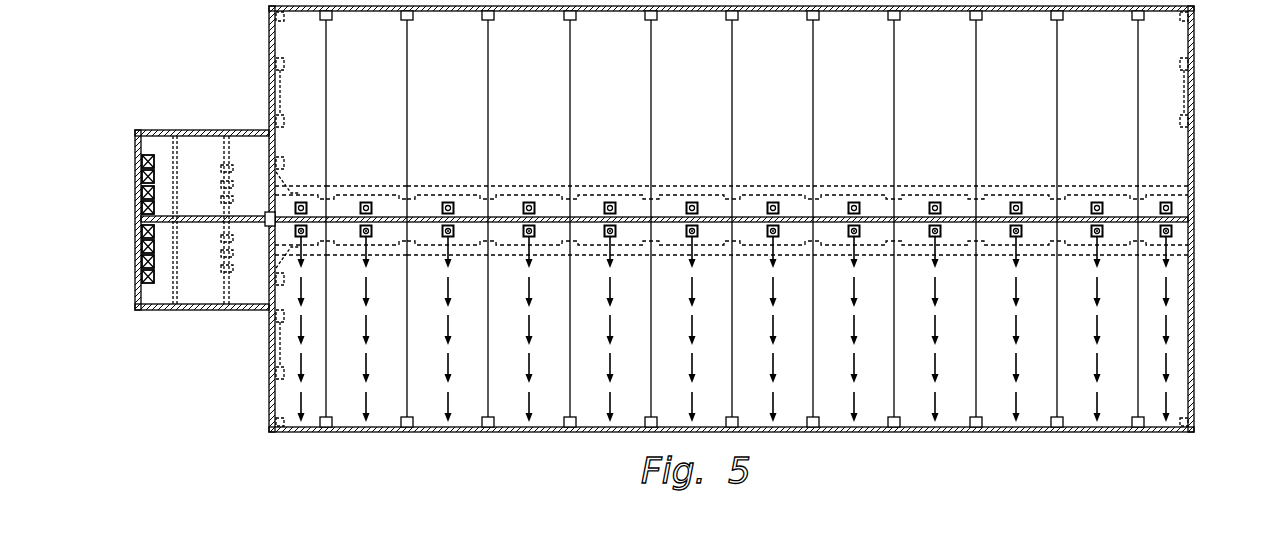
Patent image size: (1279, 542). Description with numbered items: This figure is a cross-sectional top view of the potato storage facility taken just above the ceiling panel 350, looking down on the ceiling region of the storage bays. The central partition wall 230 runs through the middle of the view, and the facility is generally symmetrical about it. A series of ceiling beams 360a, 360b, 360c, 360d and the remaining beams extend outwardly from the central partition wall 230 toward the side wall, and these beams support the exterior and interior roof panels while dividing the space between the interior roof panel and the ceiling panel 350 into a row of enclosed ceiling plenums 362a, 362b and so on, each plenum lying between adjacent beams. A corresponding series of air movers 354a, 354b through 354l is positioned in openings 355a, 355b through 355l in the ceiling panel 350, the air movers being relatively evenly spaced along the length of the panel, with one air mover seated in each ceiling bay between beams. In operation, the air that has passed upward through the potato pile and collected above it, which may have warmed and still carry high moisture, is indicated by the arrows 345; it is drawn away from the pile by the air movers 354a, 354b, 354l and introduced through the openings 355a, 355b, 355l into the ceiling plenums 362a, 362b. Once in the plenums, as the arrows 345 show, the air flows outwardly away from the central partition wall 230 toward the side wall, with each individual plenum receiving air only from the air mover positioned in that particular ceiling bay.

The central partition wall 230 is at (712, 217).
The arrows 345 is at (291, 301).
The ceiling panel 350 is at (627, 109).
The air mover 354a is at (295, 231).
The air mover 354b is at (373, 226).
The air mover 354l is at (1172, 230).
The opening 355a is at (312, 206).
The opening 355b is at (359, 214).
The opening 355l is at (1161, 209).
The ceiling beam 360a is at (278, 350).
The ceiling beam 360b is at (326, 398).
The ceiling beam 360c is at (408, 393).
The ceiling beam 360d is at (490, 375).
The ceiling plenum 362a is at (283, 402).
The ceiling plenum 362b is at (384, 390).